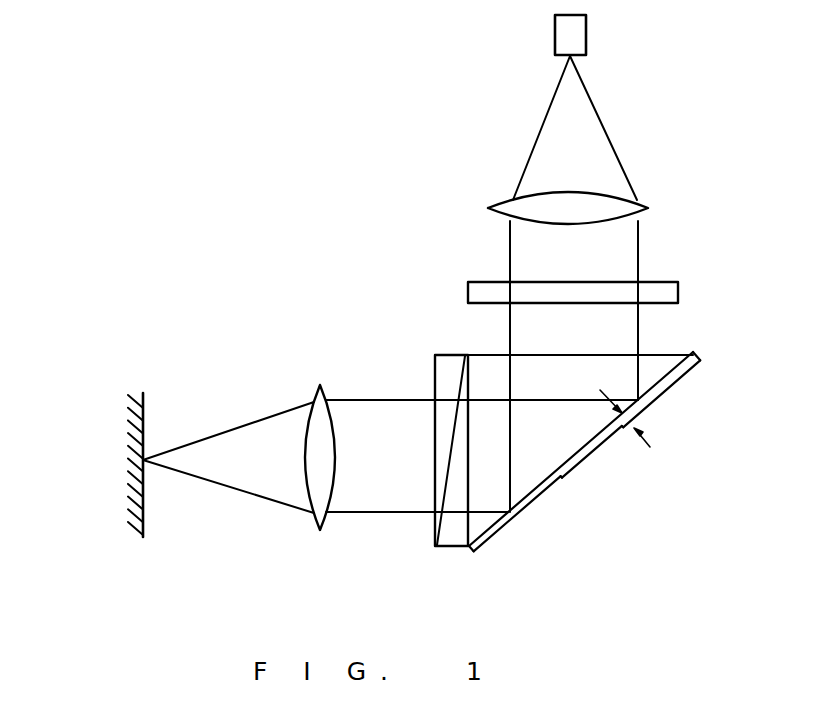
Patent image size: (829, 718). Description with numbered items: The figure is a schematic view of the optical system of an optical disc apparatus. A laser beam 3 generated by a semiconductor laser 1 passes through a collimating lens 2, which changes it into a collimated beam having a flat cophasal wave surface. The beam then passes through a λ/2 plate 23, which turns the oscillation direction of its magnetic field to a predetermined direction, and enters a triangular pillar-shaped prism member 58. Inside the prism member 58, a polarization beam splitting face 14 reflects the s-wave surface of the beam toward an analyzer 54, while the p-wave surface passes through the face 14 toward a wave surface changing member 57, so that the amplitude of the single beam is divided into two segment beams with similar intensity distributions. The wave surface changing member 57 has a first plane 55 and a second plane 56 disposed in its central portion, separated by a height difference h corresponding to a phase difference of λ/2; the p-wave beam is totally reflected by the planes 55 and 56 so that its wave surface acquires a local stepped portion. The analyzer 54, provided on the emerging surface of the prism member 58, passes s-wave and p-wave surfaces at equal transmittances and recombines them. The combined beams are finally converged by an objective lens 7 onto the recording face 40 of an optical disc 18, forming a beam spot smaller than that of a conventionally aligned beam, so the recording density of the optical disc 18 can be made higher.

The semiconductor laser 1 is at (576, 34).
The laser beam 3 is at (592, 132).
The collimating lens 2 is at (613, 205).
The λ/2 plate 23 is at (680, 291).
The analyzer 54 is at (443, 373).
The triangular pillar-shaped prism member 58 is at (488, 368).
The polarization beam splitting face 14 is at (676, 374).
The first plane 55 is at (507, 529).
The wave surface changing member 57 is at (573, 464).
The second plane 56 is at (605, 454).
The height difference h is at (643, 419).
The objective lens 7 is at (317, 420).
The recording face 40 is at (242, 445).
The optical disc 18 is at (108, 458).